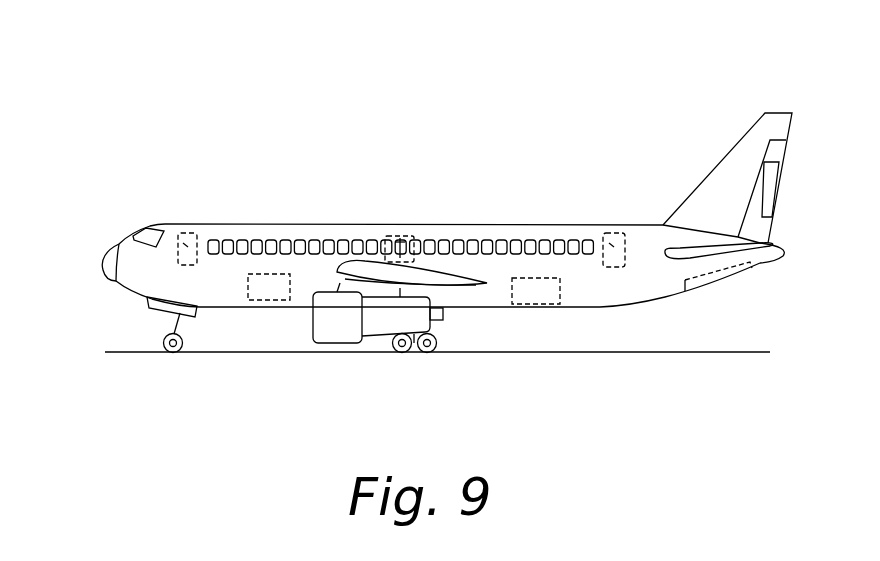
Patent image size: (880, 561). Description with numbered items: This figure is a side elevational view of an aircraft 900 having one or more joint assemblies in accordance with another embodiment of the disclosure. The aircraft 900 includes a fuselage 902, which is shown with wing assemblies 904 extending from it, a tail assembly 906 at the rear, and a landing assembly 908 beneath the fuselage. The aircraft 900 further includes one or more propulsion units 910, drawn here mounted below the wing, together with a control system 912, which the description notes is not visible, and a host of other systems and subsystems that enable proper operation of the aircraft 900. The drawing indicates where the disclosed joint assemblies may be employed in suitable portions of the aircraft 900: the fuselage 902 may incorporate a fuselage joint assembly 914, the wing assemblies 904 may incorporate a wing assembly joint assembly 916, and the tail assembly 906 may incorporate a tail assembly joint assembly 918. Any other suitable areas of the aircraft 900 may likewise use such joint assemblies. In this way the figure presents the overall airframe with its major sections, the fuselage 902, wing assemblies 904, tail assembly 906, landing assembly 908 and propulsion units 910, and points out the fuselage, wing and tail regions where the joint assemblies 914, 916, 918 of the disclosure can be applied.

The aircraft 900 is at (102, 84).
The fuselage 902 is at (619, 306).
The wing assemblies 904 is at (464, 284).
The tail assembly 906 is at (739, 118).
The landing assembly 908 is at (388, 400).
The propulsion units 910 is at (343, 340).
The control system 912 is at (90, 282).
The fuselage joint assembly 914 is at (366, 185).
The wing assembly joint assembly 916 is at (421, 238).
The tail assembly joint assembly 918 is at (678, 155).